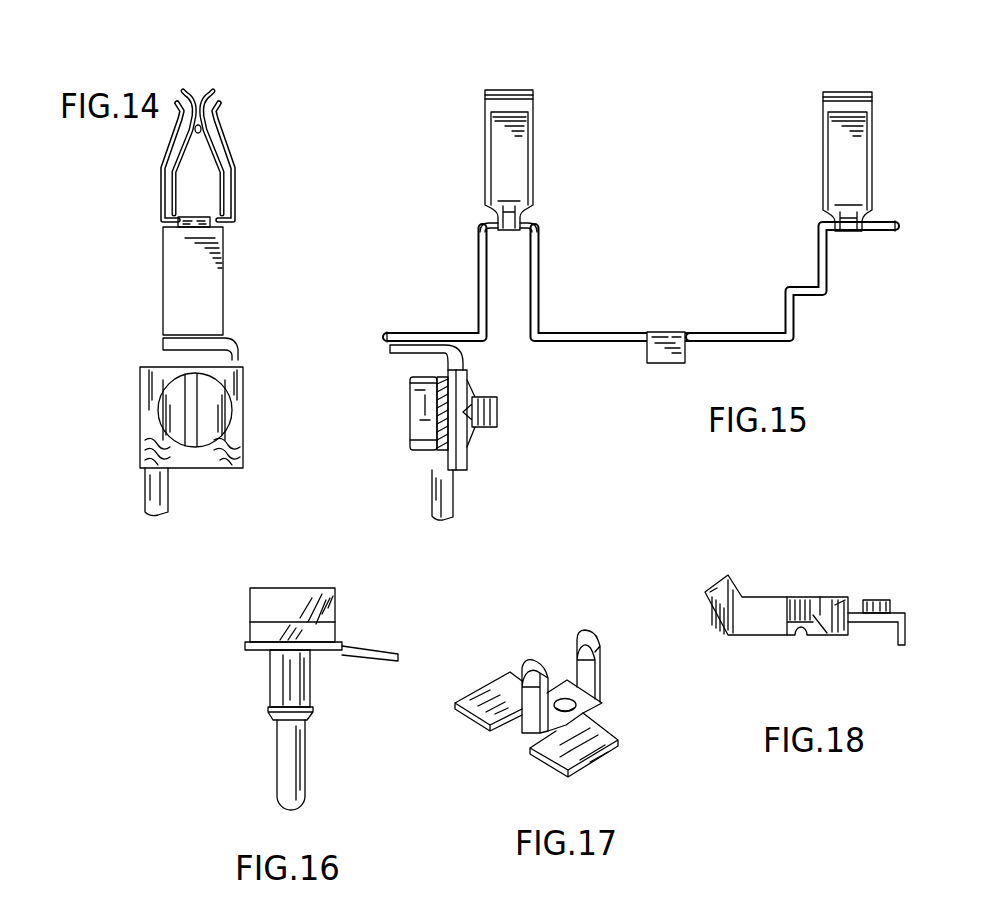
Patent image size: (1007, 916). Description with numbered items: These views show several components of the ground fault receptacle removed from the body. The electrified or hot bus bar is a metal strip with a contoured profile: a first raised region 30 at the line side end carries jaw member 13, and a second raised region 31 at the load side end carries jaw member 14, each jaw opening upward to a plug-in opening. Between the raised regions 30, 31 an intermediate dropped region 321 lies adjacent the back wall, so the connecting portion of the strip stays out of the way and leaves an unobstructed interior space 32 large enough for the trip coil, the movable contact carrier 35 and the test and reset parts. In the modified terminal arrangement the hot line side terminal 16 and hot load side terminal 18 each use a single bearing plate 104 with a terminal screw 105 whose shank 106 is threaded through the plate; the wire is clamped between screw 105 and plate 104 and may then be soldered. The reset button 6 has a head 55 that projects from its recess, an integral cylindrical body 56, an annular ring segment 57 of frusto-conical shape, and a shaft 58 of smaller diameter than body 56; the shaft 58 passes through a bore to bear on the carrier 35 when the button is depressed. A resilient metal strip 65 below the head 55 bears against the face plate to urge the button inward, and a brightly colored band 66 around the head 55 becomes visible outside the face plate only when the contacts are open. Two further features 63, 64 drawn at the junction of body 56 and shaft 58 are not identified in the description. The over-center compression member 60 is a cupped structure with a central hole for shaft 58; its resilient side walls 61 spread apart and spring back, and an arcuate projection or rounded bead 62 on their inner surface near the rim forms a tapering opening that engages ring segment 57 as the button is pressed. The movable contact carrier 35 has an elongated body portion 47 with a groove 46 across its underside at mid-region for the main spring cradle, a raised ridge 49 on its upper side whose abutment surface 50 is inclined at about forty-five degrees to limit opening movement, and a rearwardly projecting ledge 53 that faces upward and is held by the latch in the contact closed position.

In FIG. 14, the jaw member 13 is at (198, 103).
In FIG. 15, the jaw member 13 is at (485, 112).
In FIG. 15, the jaw member 14 is at (855, 107).
In FIG. 14, the first raised region 30 is at (178, 296).
In FIG. 15, the first raised region 30 is at (480, 258).
In FIG. 15, the second raised region 31 is at (829, 263).
In FIG. 15, the interior space 32 is at (727, 193).
In FIG. 15, the intermediate dropped region 321 is at (632, 330).
In FIG. 14, the bearing plate 104 is at (172, 369).
In FIG. 15, the bearing plate 104 is at (463, 380).
In FIG. 14, the terminal screw 105 is at (178, 420).
In FIG. 15, the terminal screw 105 is at (410, 437).
In FIG. 15, the shank 106 is at (497, 420).
In FIG. 14, the line side terminal 16 is at (200, 460).
In FIG. 15, the load side terminal 18 is at (467, 447).
In FIG. 16, the head 55 is at (327, 603).
In FIG. 16, the colored band 66 is at (260, 628).
In FIG. 16, the reset button 6 is at (248, 642).
In FIG. 16, the resilient metal strip 65 is at (380, 648).
In FIG. 16, the cylindrical body 56 is at (300, 680).
In FIG. 16, the collar 64 is at (268, 712).
In FIG. 16, the shoulder 63 is at (277, 717).
In FIG. 16, the annular ring segment 57 is at (307, 717).
In FIG. 16, the shaft 58 is at (297, 762).
In FIG. 17, the over-center compression member 60 is at (555, 657).
In FIG. 17, the side walls 61 is at (528, 715).
In FIG. 17, the arcuate projection or rounded bead 62 is at (540, 667).
In FIG. 18, the rearwardly projecting ledge 53 is at (713, 590).
In FIG. 18, the raised ridge 49 is at (728, 575).
In FIG. 18, the abutment surface 50 is at (742, 587).
In FIG. 18, the elongated body portion 47 is at (780, 597).
In FIG. 18, the movable contact carrier 35 is at (715, 618).
In FIG. 18, the groove 46 is at (800, 633).